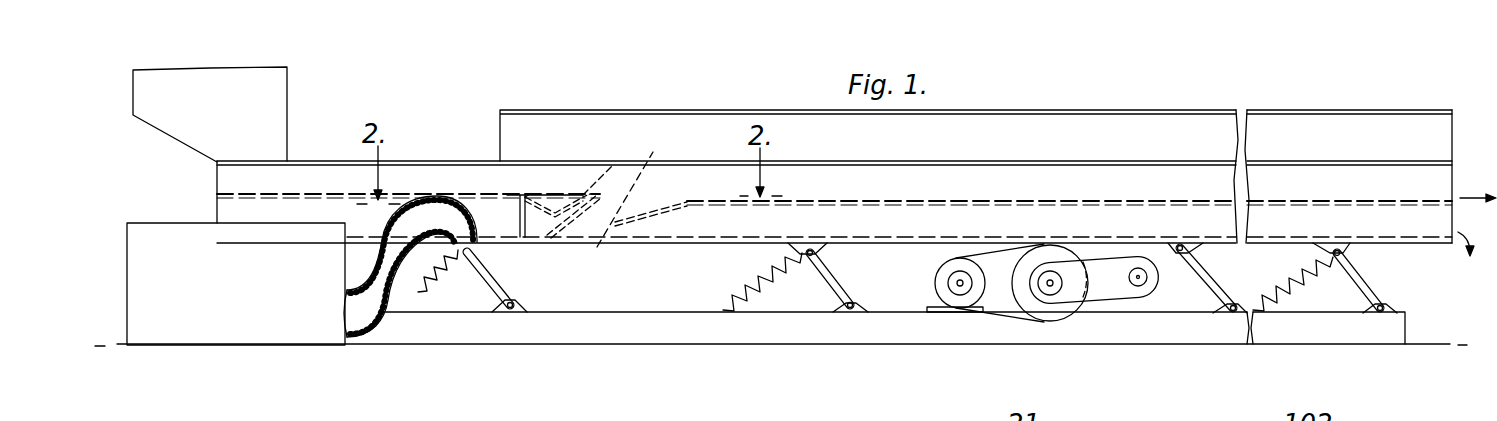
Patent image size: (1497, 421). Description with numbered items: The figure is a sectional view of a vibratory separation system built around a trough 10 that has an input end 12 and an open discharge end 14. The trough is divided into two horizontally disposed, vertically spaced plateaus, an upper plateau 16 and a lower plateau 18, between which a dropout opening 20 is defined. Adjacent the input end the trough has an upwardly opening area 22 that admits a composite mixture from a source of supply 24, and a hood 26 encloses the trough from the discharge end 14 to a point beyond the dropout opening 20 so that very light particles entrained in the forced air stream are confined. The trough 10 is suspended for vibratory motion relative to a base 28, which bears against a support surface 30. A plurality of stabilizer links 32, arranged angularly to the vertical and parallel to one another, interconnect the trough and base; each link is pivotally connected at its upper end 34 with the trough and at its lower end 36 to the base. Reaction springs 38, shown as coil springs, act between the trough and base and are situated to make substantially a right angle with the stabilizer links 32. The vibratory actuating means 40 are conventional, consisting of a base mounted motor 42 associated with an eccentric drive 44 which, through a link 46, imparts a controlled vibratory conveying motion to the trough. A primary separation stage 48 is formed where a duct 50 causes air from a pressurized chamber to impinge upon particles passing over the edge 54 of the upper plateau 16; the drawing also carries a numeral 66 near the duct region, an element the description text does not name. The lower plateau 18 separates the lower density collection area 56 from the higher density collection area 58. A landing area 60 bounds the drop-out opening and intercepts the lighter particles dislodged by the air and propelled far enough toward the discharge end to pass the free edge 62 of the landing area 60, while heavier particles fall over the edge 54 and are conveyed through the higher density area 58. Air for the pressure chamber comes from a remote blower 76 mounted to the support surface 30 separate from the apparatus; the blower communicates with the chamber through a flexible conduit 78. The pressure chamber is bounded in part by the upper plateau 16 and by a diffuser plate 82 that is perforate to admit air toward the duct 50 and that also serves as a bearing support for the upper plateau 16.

The trough 10 is at (707, 247).
The input end 12 is at (217, 186).
The open discharge end 14 is at (1432, 180).
The upper plateau 16 is at (405, 194).
The lower plateau 18 is at (913, 202).
The dropout opening 20 is at (641, 187).
The upwardly opening area 22 is at (308, 160).
The source of supply 24 is at (267, 82).
The hood 26 is at (1072, 108).
The base 28 is at (1283, 333).
The support surface 30 is at (1422, 342).
The stabilizer links 32 is at (823, 276).
The upper end 34 is at (813, 253).
The lower end 36 is at (842, 310).
The reaction springs 38 is at (770, 283).
The vibratory actuating means 40 is at (1039, 321).
The base mounted motor 42 is at (952, 300).
The eccentric drive 44 is at (1060, 315).
The link 46 is at (1123, 290).
The primary separation stage 48 is at (615, 272).
The duct 50 is at (574, 194).
The edge 54 is at (612, 173).
The lower density collection area 56 is at (1455, 154).
The higher density collection area 58 is at (1437, 220).
The landing area 60 is at (647, 210).
The free edge 62 is at (575, 240).
The gate 66 is at (545, 195).
The remote blower 76 is at (262, 328).
The flexible conduit 78 is at (385, 298).
The diffuser plate 82 is at (503, 246).